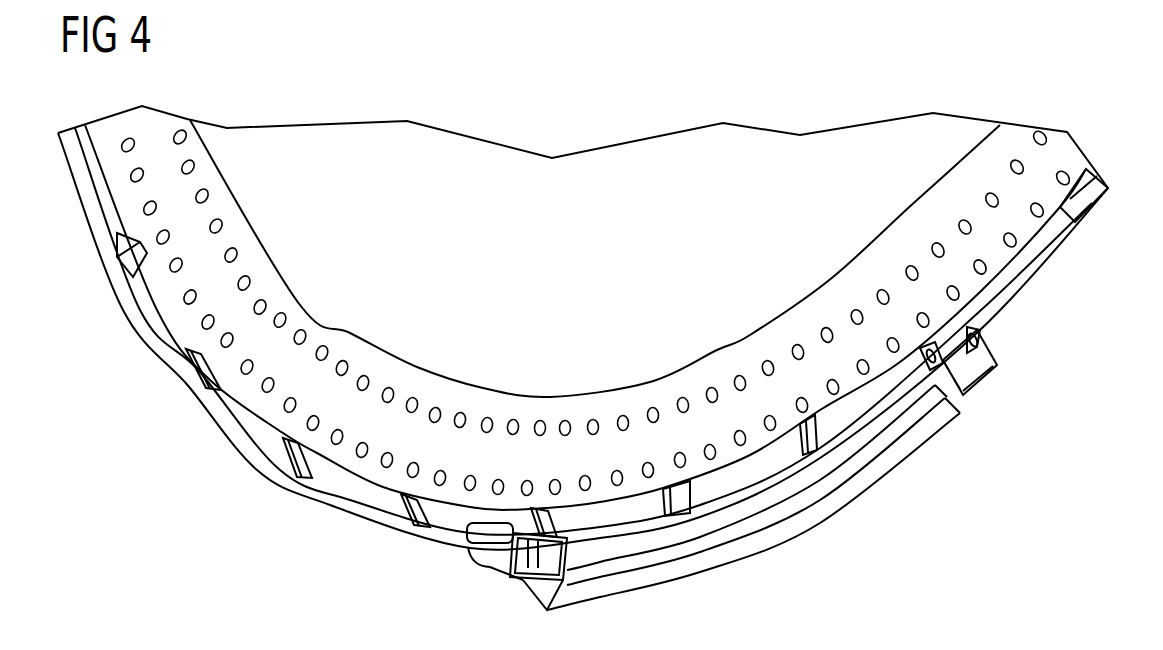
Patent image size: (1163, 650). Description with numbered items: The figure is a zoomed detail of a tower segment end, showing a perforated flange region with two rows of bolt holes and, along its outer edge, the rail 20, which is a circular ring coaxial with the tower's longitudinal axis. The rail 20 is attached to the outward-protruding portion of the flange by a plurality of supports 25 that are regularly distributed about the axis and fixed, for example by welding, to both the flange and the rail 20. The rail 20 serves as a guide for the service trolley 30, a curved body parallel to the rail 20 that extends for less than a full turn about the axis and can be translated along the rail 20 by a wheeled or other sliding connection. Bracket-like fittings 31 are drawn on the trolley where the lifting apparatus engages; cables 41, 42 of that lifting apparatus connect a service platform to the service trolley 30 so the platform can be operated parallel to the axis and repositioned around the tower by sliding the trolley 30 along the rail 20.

The rail 20 is at (1040, 273).
The supports 25 is at (1078, 200).
The service trolley 30 is at (832, 507).
The bracket 31 is at (518, 582).
The cable 41 is at (483, 557).
The cable 42 is at (982, 388).